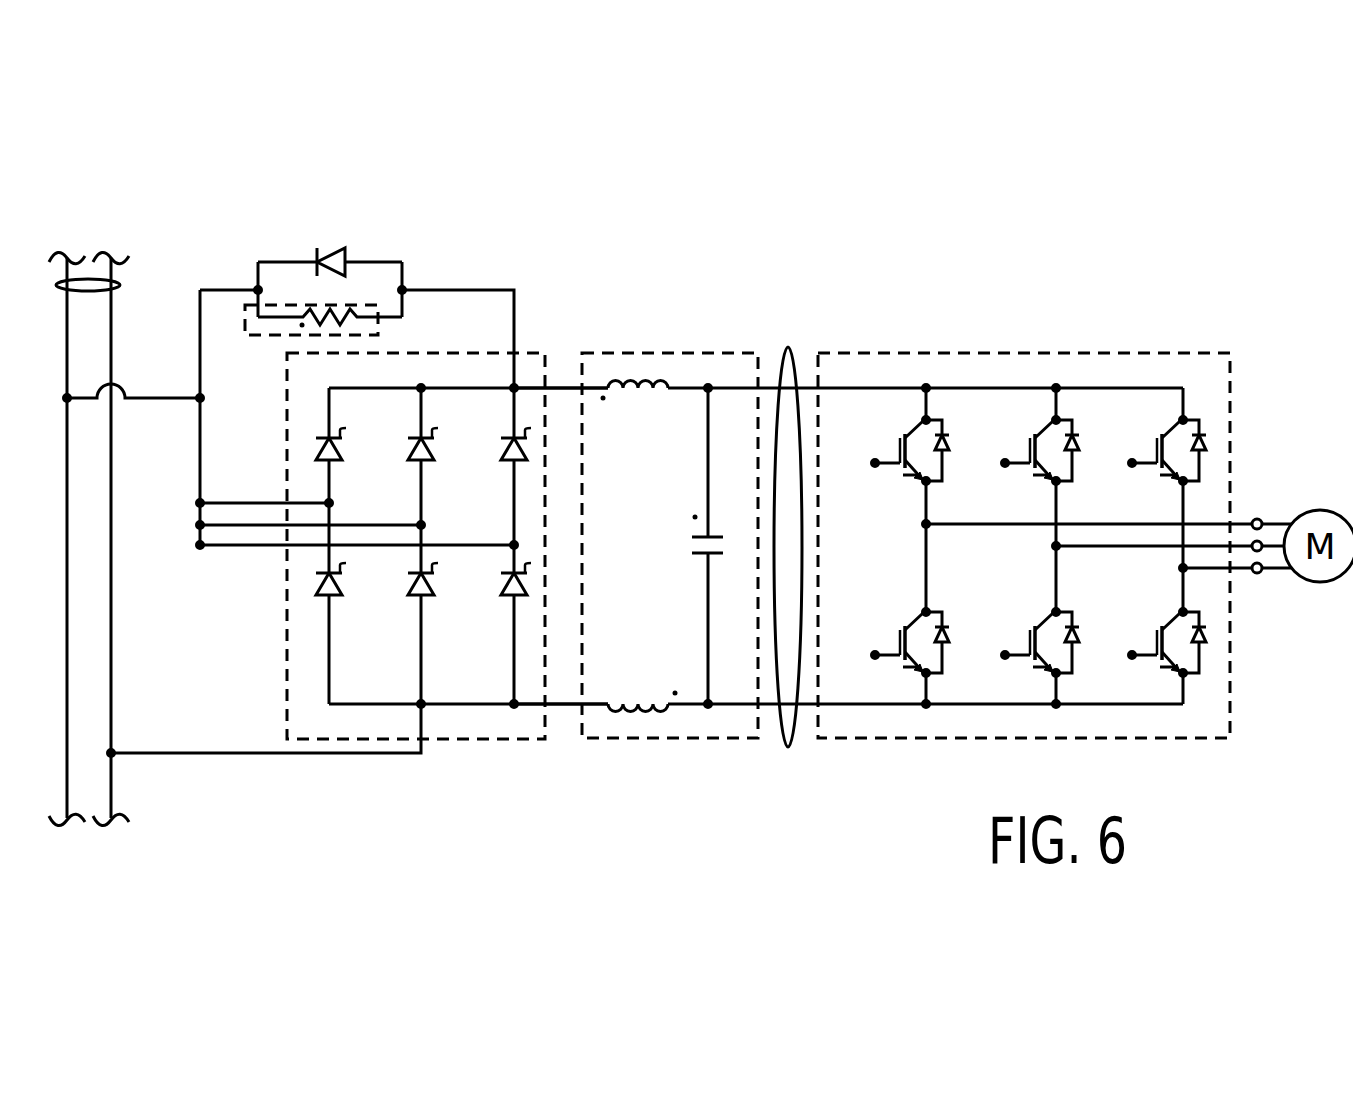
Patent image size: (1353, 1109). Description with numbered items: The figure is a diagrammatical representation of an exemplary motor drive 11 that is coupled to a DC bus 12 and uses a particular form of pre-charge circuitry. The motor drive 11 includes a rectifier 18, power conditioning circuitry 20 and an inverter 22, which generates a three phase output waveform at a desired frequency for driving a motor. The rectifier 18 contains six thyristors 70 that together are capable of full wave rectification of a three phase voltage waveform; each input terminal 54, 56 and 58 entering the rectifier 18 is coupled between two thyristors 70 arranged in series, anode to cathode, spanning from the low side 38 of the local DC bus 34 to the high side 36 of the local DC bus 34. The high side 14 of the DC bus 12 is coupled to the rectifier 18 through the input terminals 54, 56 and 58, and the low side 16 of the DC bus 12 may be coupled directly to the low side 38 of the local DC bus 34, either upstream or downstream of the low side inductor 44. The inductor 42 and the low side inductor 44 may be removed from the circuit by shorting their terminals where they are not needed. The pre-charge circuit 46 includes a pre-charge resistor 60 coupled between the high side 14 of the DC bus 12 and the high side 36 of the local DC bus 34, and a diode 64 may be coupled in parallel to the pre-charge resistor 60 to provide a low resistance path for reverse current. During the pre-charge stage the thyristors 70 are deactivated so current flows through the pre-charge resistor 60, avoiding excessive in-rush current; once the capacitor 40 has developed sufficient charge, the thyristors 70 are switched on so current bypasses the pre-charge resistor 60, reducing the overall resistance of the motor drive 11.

The motor drive 11 is at (696, 215).
The DC bus 12 is at (124, 281).
The high side of the DC bus 14 is at (160, 398).
The low side of the DC bus 16 is at (217, 752).
The rectifier 18 is at (496, 353).
The power conditioning circuitry 20 is at (669, 352).
The inverter 22 is at (1026, 352).
The local DC bus 34 is at (796, 365).
The high side of the local DC bus 36 is at (560, 387).
The low side of the local DC bus 38 is at (560, 710).
The capacitor 40 is at (692, 555).
The inductor 42 is at (641, 393).
The low side inductor 44 is at (629, 700).
The pre-charge circuit 46 is at (245, 306).
The input terminal 54 is at (228, 500).
The input terminal 56 is at (230, 523).
The input terminal 58 is at (217, 548).
The pre-charge resistor 60 is at (352, 315).
The diode 64 is at (331, 252).
The thyristors 70 is at (340, 458).